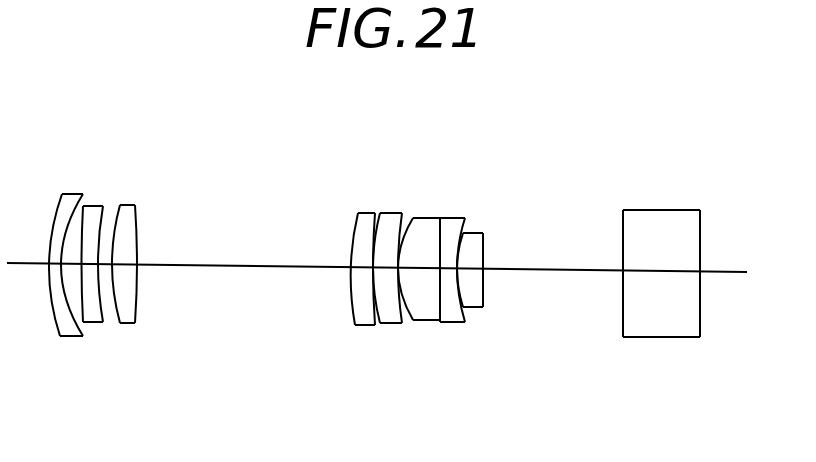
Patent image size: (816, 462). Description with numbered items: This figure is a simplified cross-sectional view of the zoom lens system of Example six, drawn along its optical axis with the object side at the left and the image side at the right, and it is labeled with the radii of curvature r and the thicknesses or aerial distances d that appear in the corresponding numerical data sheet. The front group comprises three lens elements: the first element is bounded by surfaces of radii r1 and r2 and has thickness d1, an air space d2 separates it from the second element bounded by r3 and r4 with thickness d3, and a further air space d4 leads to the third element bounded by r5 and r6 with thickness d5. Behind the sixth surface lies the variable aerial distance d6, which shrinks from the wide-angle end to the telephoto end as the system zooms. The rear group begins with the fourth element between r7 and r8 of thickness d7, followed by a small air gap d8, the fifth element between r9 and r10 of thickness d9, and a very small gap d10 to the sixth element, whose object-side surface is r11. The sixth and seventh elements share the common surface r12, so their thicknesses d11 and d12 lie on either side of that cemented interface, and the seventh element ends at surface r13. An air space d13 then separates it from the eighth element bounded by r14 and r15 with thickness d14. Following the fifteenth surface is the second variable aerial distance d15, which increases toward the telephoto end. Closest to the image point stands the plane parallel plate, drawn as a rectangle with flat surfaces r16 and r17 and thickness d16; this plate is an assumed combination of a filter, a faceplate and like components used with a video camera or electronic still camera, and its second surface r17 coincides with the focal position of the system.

The radius of curvature of first lens surface r1 is at (56, 205).
The radius of curvature of second lens surface r2 is at (76, 200).
The radius of curvature of third lens surface r3 is at (85, 206).
The radius of curvature of fourth lens surface r4 is at (103, 206).
The radius of curvature of fifth lens surface r5 is at (121, 205).
The radius of curvature of sixth lens surface r6 is at (136, 205).
The radius of curvature of seventh lens surface r7 is at (356, 213).
The radius of curvature of eighth lens surface r8 is at (372, 213).
The radius of curvature of ninth lens surface r9 is at (381, 213).
The radius of curvature of tenth lens surface r10 is at (402, 213).
The radius of curvature of eleventh lens surface r11 is at (413, 218).
The radius of curvature of twelfth lens surface r12 is at (440, 218).
The radius of curvature of thirteenth lens surface r13 is at (464, 218).
The radius of curvature of fourteenth lens surface r14 is at (464, 233).
The radius of curvature of fifteenth lens surface r15 is at (484, 233).
The radius of curvature of sixteenth surface r16 is at (623, 210).
The radius of curvature of seventeenth surface r17 is at (701, 218).
The thickness of first lens element d1 is at (55, 265).
The aerial distance between first and second lens elements d2 is at (72, 265).
The thickness of second lens element d3 is at (90, 265).
The aerial distance between second and third lens elements d4 is at (105, 265).
The thickness of third lens element d5 is at (125, 265).
The variable aerial distance between lens groups d6 is at (243, 266).
The thickness of fourth lens element d7 is at (362, 268).
The aerial distance between fourth and fifth lens elements d8 is at (374, 268).
The thickness of fifth lens element d9 is at (386, 268).
The aerial distance between fifth and sixth lens elements d10 is at (399, 268).
The thickness of sixth lens element d11 is at (419, 268).
The thickness of seventh lens element d12 is at (449, 268).
The aerial distance between seventh and eighth lens elements d13 is at (458, 268).
The thickness of eighth lens element d14 is at (470, 268).
The variable aerial distance to plane parallel plate d15 is at (553, 270).
The thickness of plane parallel plate d16 is at (667, 272).